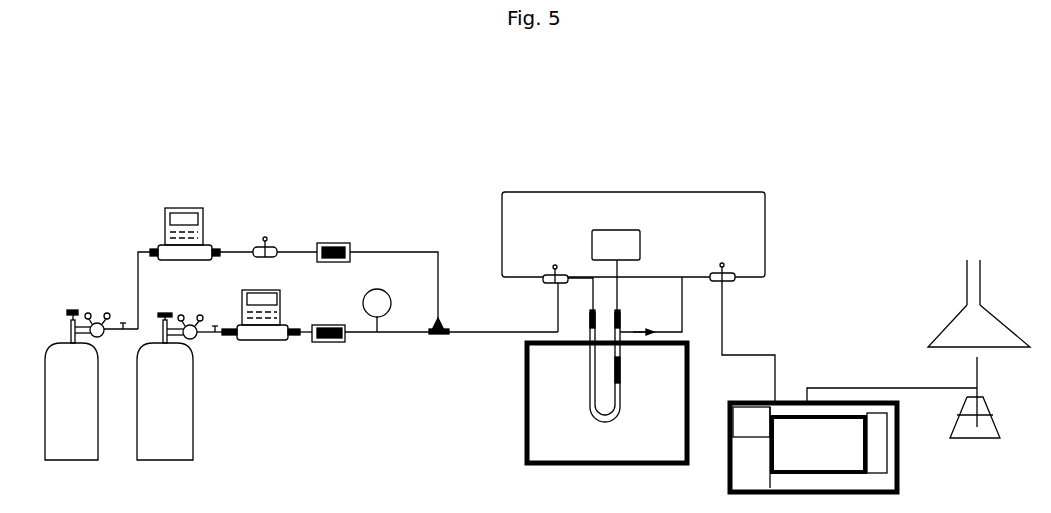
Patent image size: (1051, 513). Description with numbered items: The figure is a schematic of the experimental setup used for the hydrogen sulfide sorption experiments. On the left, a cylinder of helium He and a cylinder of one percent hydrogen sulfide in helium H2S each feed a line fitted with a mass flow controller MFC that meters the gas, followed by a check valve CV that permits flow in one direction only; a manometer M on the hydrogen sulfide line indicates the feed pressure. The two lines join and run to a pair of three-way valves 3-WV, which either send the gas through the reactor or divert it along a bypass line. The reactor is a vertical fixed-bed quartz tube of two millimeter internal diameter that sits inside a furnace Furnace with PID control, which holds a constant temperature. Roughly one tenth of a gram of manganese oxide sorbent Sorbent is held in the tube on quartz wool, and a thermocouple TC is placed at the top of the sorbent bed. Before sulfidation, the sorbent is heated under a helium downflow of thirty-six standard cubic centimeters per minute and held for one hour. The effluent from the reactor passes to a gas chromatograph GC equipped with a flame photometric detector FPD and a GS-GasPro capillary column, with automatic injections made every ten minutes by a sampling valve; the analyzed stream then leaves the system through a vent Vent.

The helium supply He is at (91, 385).
The hydrogen sulfide feed H2S is at (179, 386).
The mass flow controller MFC is at (225, 286).
The check valve CV is at (331, 283).
The manometer M is at (377, 310).
The 3-way valve 3-WV is at (631, 265).
The thermocouple TC is at (616, 271).
The furnace Furnace is at (607, 398).
The sorbent Sorbent is at (638, 370).
The gas chromatograph GC is at (813, 447).
The flame photometric detector FPD is at (751, 422).
The vent Vent is at (979, 303).